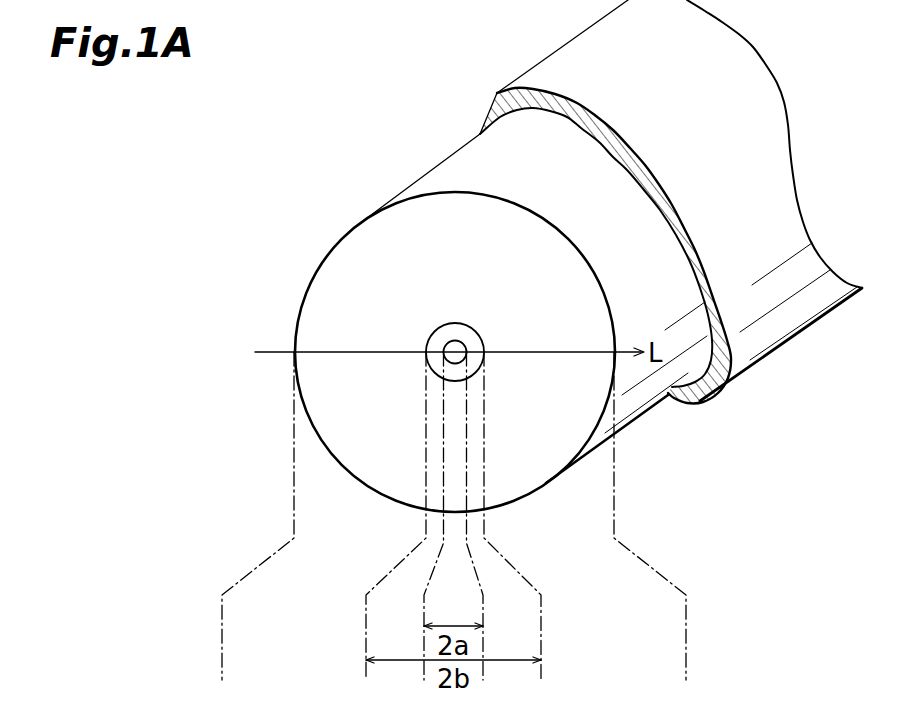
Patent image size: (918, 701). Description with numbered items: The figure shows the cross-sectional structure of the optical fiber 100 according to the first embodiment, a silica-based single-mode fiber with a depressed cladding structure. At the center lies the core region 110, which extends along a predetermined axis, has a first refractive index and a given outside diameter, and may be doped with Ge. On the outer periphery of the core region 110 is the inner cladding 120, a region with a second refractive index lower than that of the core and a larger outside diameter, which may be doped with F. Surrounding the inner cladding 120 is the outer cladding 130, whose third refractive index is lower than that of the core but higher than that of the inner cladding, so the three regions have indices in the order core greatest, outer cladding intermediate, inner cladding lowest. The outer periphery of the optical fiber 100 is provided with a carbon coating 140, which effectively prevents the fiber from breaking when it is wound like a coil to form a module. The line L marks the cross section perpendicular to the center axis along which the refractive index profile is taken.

The optical fiber 100 is at (478, 161).
The core region 110 is at (452, 343).
The inner cladding 120 is at (453, 332).
The outer cladding 130 is at (367, 235).
The carbon coating 140 is at (747, 57).